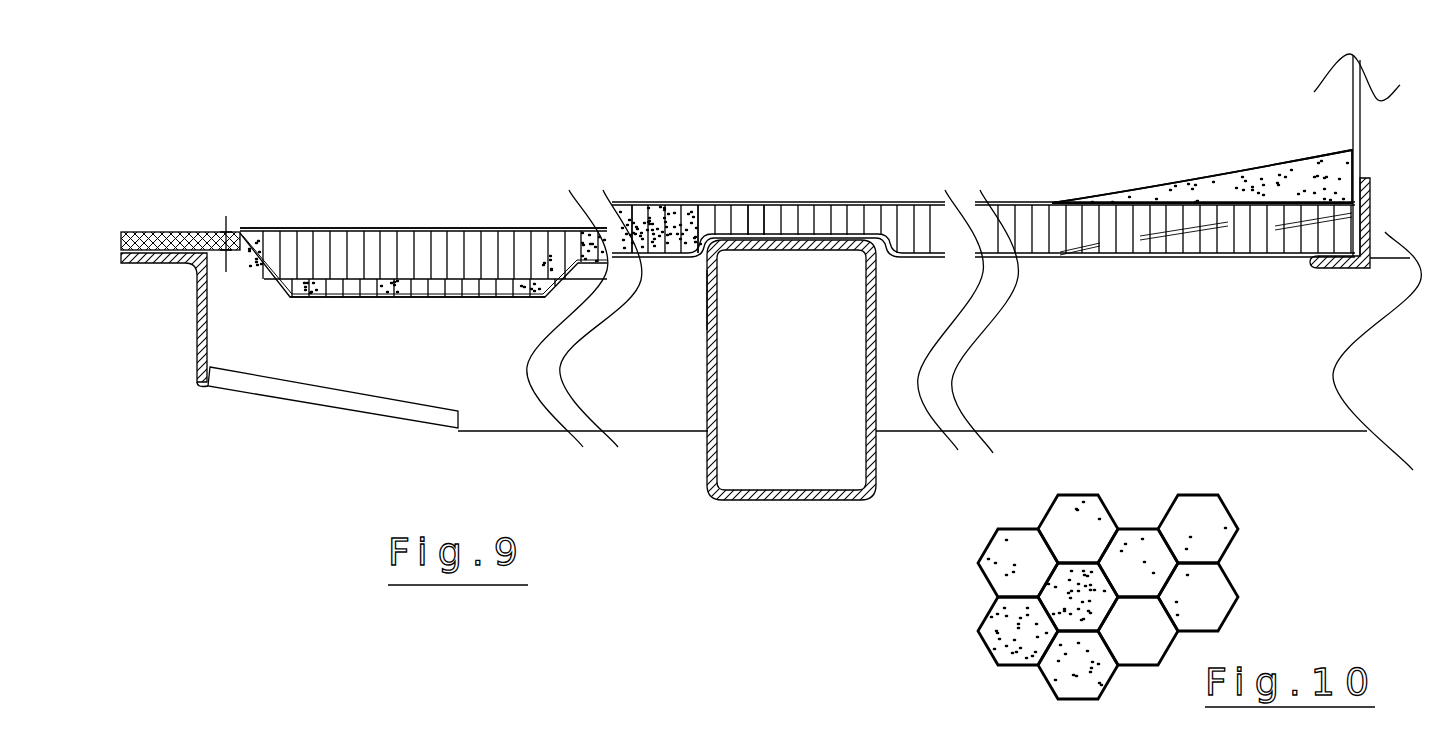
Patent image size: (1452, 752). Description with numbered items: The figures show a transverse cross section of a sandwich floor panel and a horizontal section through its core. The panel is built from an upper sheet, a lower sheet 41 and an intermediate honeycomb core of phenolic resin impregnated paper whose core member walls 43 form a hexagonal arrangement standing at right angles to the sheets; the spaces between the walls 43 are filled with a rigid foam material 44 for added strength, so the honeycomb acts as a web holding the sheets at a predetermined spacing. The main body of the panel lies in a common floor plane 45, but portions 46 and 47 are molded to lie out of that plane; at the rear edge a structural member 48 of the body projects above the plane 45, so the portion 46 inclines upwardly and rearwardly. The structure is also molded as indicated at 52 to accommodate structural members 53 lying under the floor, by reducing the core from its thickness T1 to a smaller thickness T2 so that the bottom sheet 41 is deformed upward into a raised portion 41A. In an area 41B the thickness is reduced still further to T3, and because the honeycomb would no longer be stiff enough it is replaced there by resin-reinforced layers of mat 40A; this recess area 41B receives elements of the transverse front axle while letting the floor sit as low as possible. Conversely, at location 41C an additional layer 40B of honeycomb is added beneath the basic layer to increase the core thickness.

In FIG. 9, the layers of mat 40A is at (133, 234).
In FIG. 9, the additional layer of honeycomb 40B is at (386, 298).
In FIG. 9, the lower sheet 41 is at (962, 258).
In FIG. 9, the raised portion 41A is at (846, 238).
In FIG. 9, the reduced thickness area 41B is at (185, 264).
In FIG. 9, the increased thickness location 41C is at (506, 300).
In FIG. 10, the core member walls 43 is at (982, 644).
In FIG. 10, the rigid foam material 44 is at (1000, 570).
In FIG. 9, the common floor plane 45 is at (870, 204).
In FIG. 9, the out-of-plane portion 46 is at (1164, 182).
In FIG. 9, the out-of-plane portion 47 is at (406, 204).
In FIG. 9, the structural member of the body 48 is at (1226, 194).
In FIG. 9, the molded accommodation 52 is at (703, 266).
In FIG. 9, the structural members under the floor panel 53 is at (706, 335).
In FIG. 9, the core member thickness T1 is at (664, 205).
In FIG. 9, the reduced core thickness T2 is at (782, 205).
In FIG. 9, the further reduced thickness T3 is at (228, 217).